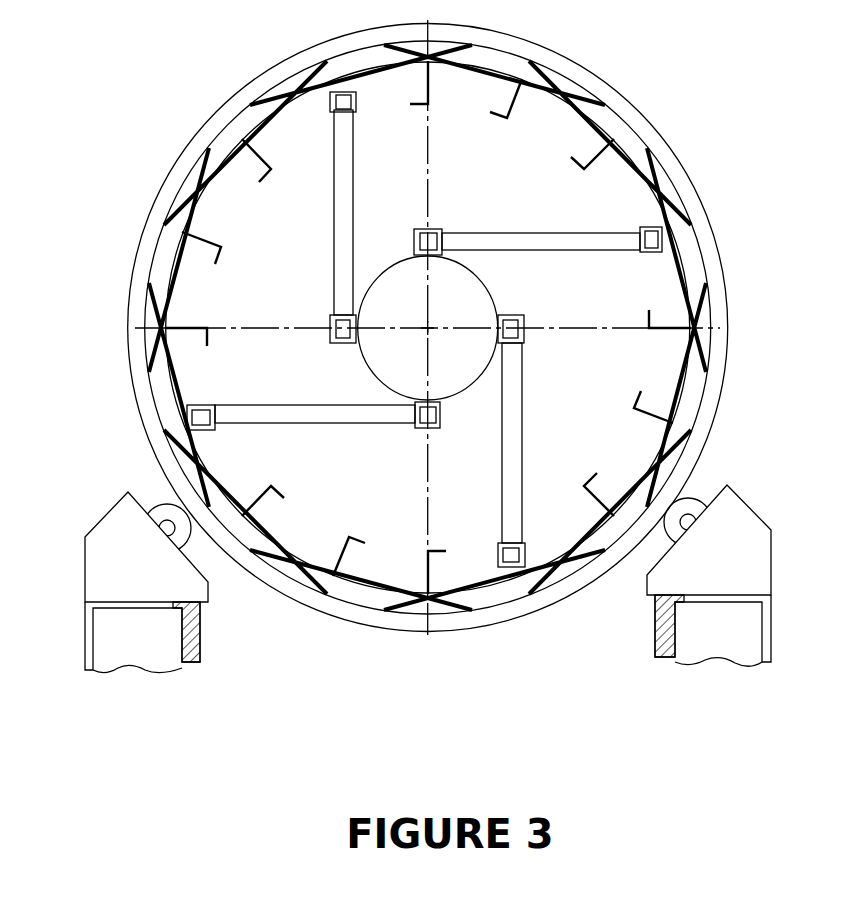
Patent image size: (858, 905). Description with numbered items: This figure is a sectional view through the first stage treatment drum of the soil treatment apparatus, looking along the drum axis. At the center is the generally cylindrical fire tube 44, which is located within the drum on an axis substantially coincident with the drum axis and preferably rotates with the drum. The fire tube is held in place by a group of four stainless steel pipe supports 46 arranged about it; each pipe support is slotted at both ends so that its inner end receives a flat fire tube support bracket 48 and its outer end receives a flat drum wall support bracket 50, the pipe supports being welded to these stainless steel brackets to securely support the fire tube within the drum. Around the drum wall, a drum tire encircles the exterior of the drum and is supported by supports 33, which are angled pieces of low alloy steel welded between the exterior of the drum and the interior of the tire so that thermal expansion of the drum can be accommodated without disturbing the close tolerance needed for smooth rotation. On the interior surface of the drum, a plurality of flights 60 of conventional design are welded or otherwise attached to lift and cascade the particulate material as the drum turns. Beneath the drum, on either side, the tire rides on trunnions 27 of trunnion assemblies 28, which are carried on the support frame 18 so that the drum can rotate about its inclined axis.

The support frame 18 is at (200, 628).
The trunnion 27 is at (158, 507).
The trunnion assembly 28 is at (85, 570).
The support 33 is at (272, 98).
The fire tube 44 is at (485, 280).
The pipe support 46 is at (353, 186).
The fire tube support bracket 48 is at (525, 318).
The drum wall support bracket 50 is at (358, 102).
The flight 60 is at (224, 252).